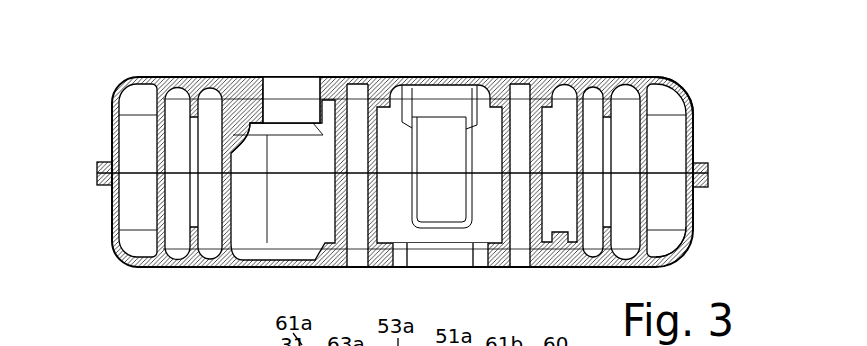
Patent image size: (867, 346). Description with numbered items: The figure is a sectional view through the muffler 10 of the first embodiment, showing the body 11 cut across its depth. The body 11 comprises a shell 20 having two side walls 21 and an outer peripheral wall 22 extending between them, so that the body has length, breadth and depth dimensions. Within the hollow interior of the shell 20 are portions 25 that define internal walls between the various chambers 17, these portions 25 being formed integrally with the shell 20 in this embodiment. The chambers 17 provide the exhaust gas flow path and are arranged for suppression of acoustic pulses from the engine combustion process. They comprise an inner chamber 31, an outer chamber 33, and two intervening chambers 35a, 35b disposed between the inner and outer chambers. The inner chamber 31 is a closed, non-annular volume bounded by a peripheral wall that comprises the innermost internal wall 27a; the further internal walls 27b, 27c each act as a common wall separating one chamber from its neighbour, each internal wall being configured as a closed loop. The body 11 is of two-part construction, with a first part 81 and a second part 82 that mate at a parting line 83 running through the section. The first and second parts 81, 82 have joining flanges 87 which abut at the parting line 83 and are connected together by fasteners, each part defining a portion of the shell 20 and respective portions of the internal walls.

The muffler 10 is at (114, 68).
The joining flanges 87 is at (105, 160).
The intervening chamber 35b is at (177, 110).
The intervening chamber 35a is at (207, 110).
The portions 25 is at (255, 100).
The inner chamber 31 is at (287, 147).
The innermost internal wall 27a is at (533, 113).
The internal wall 27b is at (575, 143).
The internal wall 27c is at (643, 133).
The side walls 21 is at (628, 76).
The body 11 is at (657, 76).
The outer chamber 33 is at (662, 102).
The first part 81 is at (693, 100).
The shell 20 is at (693, 128).
The parting line 83 is at (701, 163).
The outer peripheral wall 22 is at (699, 195).
The second part 82 is at (693, 210).
The chambers 17 is at (663, 233).